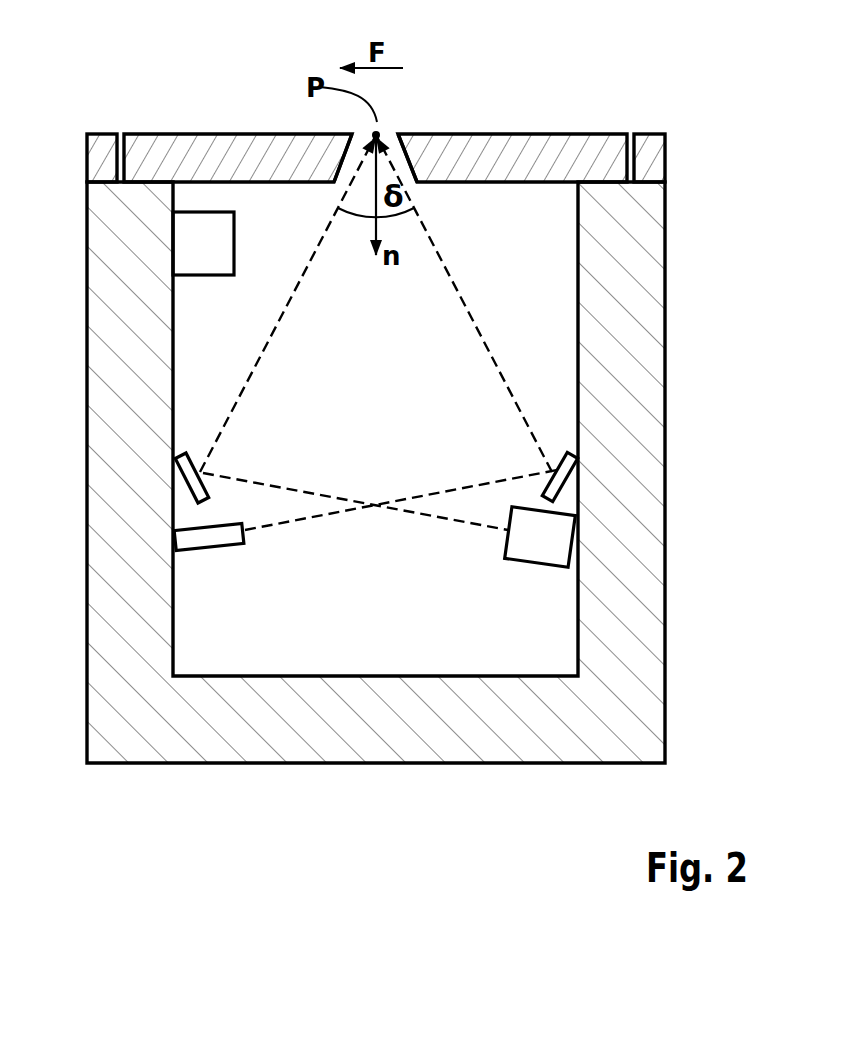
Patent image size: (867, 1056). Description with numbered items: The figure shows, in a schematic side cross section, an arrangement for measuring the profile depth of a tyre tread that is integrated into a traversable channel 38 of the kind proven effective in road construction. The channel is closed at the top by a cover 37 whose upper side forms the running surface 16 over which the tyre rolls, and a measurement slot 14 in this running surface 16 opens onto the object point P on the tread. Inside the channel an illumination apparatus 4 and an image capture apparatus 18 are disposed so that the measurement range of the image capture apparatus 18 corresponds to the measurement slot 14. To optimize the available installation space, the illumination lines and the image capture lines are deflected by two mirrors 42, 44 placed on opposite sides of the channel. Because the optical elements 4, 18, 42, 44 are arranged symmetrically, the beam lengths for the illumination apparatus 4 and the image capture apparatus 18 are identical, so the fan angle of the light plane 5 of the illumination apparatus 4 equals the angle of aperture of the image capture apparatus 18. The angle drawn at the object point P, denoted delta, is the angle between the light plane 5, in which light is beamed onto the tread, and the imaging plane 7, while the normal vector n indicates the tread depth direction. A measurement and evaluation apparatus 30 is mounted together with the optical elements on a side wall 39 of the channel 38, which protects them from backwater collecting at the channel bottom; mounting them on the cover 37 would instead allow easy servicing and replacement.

The illumination apparatus 4 is at (192, 537).
The light plane 5 is at (476, 332).
The imaging plane 7 is at (274, 332).
The measurement slot 14 is at (394, 122).
The running surface 16 is at (260, 116).
The image capture apparatus 18 is at (560, 537).
The measurement and evaluation apparatus 30 is at (204, 212).
The cover 37 is at (538, 152).
The traversable channel 38 is at (696, 258).
The side wall 39 is at (120, 275).
The mirror 42 is at (180, 470).
The mirror 44 is at (566, 470).